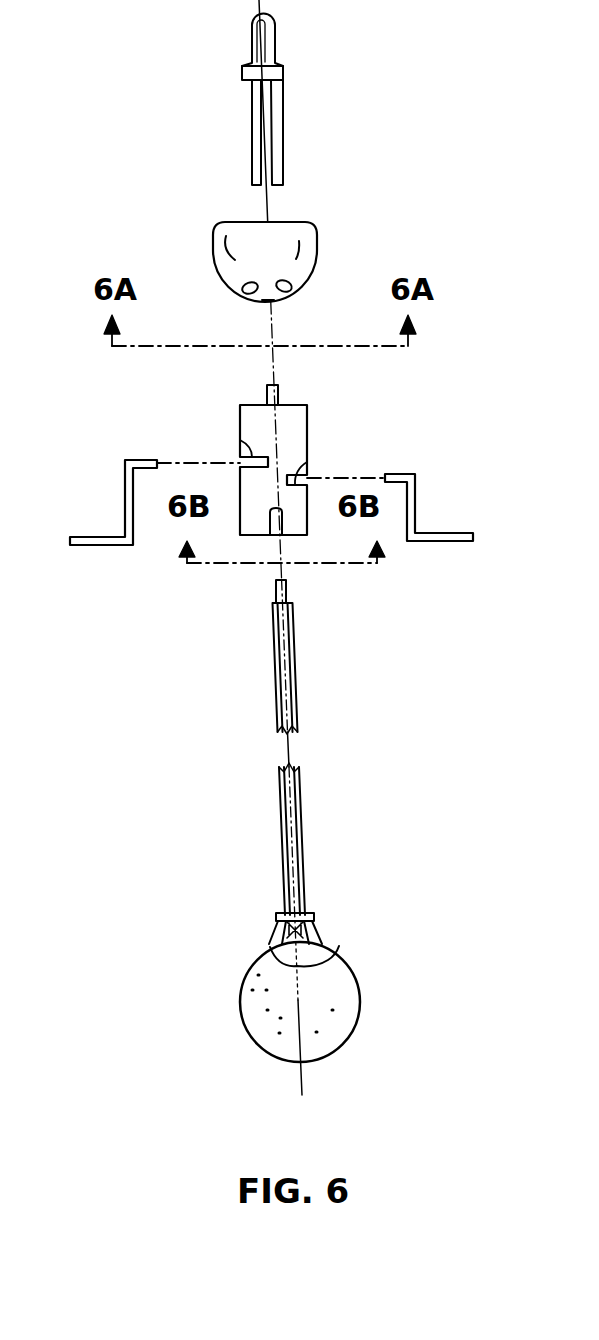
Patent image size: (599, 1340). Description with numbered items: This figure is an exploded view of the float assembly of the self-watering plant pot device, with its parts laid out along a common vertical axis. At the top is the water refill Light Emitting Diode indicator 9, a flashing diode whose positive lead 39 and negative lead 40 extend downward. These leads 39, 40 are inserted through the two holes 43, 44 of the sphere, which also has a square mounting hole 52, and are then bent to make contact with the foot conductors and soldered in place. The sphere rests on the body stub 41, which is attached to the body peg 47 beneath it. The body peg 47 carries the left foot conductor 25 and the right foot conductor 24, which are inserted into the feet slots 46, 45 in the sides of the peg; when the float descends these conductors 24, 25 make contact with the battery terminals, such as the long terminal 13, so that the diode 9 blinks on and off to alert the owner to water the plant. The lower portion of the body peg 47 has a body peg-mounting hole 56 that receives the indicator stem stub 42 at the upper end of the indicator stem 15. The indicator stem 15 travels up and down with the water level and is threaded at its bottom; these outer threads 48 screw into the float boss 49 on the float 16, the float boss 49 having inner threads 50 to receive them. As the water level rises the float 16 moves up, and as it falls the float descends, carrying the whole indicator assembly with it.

The Light Emitting Diode indicator 9 is at (275, 35).
The positive lead 39 is at (252, 125).
The negative lead 40 is at (282, 125).
The long terminal 13 is at (318, 250).
The hole 43 is at (297, 288).
The hole 44 is at (243, 295).
The square mounting hole 52 is at (266, 303).
The body stub 41 is at (283, 381).
The body peg 47 is at (297, 430).
The feet slot 46 is at (240, 447).
The feet slot 45 is at (293, 473).
The body peg-mounting hole 56 is at (282, 530).
The left foot conductor 25 is at (80, 536).
The right foot conductor 24 is at (462, 530).
The indicator stem stub 42 is at (275, 590).
The indicator stem 15 is at (272, 683).
The outer threads 48 is at (283, 913).
The float boss 49 is at (320, 915).
The inner threads 50 is at (300, 917).
The float 16 is at (360, 975).